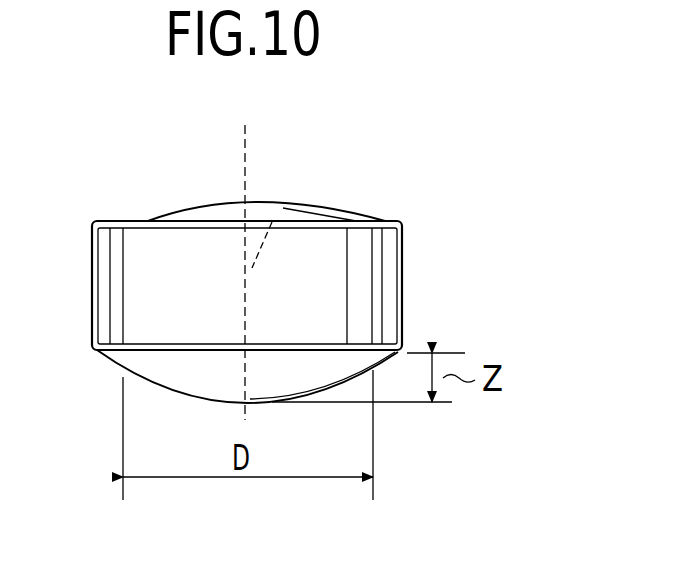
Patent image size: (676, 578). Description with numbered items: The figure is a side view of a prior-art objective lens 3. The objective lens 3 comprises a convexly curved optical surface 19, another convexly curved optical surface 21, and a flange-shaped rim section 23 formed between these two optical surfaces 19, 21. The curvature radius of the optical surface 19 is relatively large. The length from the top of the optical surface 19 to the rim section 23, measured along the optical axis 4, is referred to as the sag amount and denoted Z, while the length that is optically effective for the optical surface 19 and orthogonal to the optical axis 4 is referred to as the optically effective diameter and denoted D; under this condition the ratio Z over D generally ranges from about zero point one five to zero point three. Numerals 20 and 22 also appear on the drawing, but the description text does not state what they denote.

The objective lens 3 is at (108, 217).
The optical axis 4 is at (300, 207).
The convexly curved optical surface 19 is at (318, 388).
The lens convex surface 20 is at (184, 378).
The convexly curved optical surface 21 is at (207, 204).
The lens optical axis 22 is at (268, 207).
The flange-shaped rim section 23 is at (108, 287).